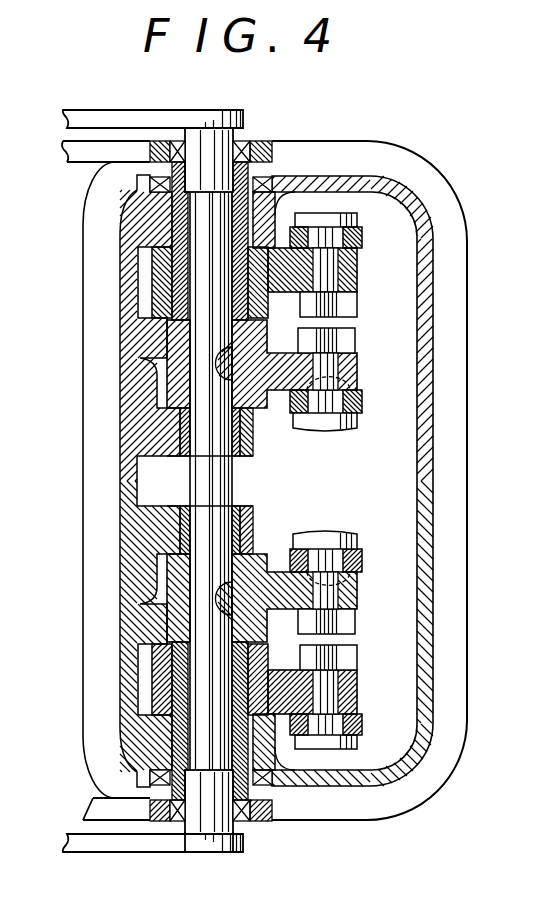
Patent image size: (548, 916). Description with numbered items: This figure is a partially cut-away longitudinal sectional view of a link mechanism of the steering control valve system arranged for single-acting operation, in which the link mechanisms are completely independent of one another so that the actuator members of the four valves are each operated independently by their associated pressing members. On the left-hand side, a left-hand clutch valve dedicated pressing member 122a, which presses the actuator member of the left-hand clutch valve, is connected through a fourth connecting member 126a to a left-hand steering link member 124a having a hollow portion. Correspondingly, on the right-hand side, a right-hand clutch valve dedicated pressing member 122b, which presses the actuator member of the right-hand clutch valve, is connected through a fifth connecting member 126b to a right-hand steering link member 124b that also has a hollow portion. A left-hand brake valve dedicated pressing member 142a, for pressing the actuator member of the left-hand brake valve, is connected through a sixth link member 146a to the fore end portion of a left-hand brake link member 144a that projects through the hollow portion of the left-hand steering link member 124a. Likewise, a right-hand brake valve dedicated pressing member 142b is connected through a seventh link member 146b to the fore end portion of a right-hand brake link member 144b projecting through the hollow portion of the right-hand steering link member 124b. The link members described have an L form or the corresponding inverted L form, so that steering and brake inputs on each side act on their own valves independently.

The upper shaft extension 144b is at (116, 109).
The lower shaft extension 144a is at (150, 846).
The right-hand steering link member 124b is at (97, 157).
The left-hand steering link member 124a is at (107, 806).
The fifth connecting member 126b is at (156, 283).
The fourth connecting member 126a is at (156, 668).
The seventh link member 146b is at (170, 358).
The sixth link member 146a is at (170, 588).
The right-hand clutch valve dedicated pressing member 122b is at (361, 238).
The left-hand clutch valve dedicated pressing member 122a is at (362, 727).
The right-hand brake valve dedicated pressing member 142b is at (362, 404).
The left-hand brake valve dedicated pressing member 142a is at (361, 562).